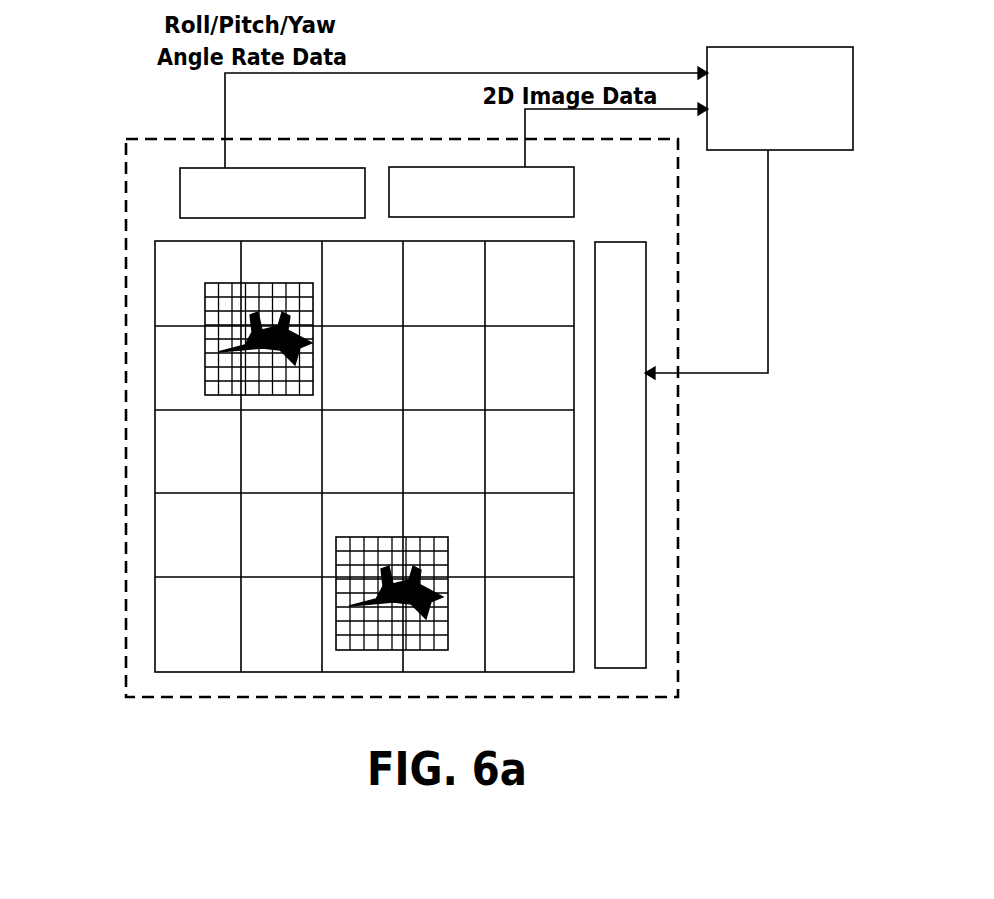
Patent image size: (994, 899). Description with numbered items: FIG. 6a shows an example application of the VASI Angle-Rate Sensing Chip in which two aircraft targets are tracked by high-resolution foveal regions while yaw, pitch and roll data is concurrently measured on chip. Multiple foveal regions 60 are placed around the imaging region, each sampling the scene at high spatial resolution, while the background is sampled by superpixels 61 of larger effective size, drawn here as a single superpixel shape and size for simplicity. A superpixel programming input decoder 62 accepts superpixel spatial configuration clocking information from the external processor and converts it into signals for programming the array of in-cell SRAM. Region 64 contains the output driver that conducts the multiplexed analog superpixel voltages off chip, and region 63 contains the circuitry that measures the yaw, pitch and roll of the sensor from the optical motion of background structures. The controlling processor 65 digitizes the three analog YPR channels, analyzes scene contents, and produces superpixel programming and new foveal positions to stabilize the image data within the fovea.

The foveal regions 60 is at (353, 557).
The superpixels 61 is at (195, 627).
The superpixel programming input decoder 62 is at (627, 623).
The yaw, pitch and roll measurement region 63 is at (203, 195).
The output driver region 64 is at (422, 185).
The controlling processor 65 is at (797, 150).